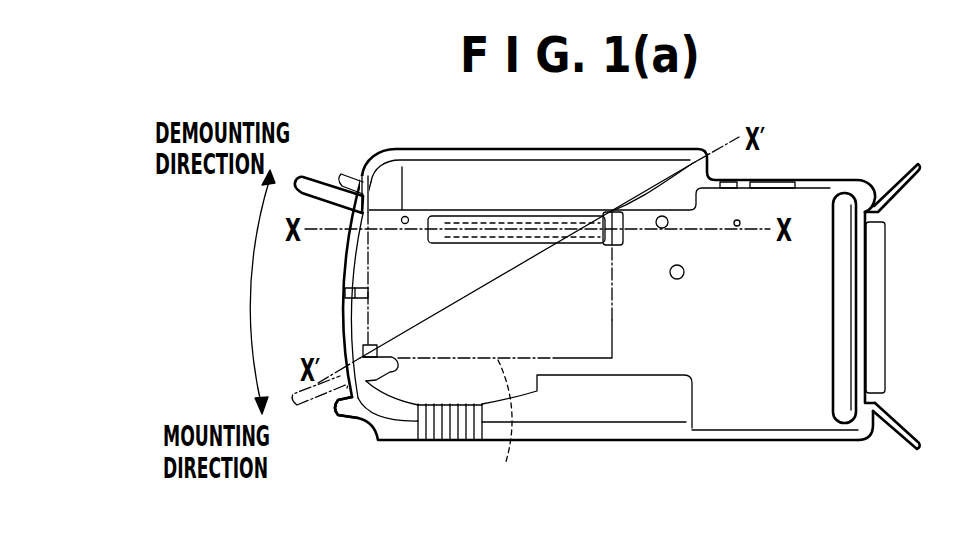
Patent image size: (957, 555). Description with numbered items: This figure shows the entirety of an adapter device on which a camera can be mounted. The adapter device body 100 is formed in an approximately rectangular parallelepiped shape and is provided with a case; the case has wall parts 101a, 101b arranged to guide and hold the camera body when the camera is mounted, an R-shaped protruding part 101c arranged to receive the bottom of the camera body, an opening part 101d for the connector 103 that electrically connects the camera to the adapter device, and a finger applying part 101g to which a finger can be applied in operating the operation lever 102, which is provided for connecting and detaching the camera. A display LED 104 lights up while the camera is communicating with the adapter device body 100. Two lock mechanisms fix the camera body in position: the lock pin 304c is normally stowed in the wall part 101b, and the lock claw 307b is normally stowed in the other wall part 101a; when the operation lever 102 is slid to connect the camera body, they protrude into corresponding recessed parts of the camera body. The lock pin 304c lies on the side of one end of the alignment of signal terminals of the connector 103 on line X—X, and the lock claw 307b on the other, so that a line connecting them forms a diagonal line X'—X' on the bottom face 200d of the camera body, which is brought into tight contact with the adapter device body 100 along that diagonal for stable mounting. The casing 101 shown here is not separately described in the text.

The adapter device body 100 is at (600, 442).
The housing 101 is at (770, 407).
The wall part 101a is at (667, 407).
The wall part 101b is at (428, 187).
The R-shaped protruding part 101c is at (843, 212).
The opening part 101d is at (523, 217).
The finger applying part 101g is at (343, 418).
The operation lever 102 is at (317, 182).
The connector 103 is at (580, 217).
The display LED 104 is at (352, 291).
The bottom face 200d is at (476, 432).
The lock pin 304c is at (676, 160).
The lock claw 307b is at (362, 350).